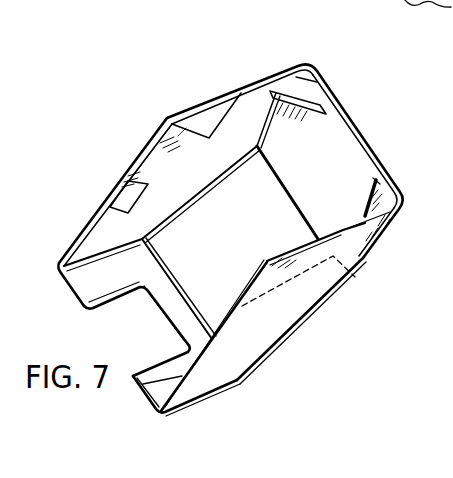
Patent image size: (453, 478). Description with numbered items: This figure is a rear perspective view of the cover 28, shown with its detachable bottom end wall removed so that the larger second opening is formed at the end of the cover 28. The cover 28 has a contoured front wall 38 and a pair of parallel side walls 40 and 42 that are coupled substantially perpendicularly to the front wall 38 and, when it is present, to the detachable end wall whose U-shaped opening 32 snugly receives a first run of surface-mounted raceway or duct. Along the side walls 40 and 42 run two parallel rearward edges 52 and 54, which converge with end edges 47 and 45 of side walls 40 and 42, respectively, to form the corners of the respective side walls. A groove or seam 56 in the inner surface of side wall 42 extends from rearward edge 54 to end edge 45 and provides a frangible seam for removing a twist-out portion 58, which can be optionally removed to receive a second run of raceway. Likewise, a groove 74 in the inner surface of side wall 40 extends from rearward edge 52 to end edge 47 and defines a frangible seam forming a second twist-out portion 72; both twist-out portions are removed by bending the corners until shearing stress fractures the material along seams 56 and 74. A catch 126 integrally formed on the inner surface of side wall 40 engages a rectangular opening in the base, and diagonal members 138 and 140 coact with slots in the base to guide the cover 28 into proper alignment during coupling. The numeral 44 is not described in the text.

The cover 28 is at (322, 71).
The U-shaped opening 32 is at (113, 297).
The front wall 38 is at (243, 268).
The side wall 40 is at (268, 320).
The side wall 42 is at (134, 160).
The side wall 44 is at (366, 128).
The end edge 45 is at (241, 97).
The end edge 47 is at (372, 245).
The rearward edge 52 is at (200, 365).
The rearward edge 54 is at (80, 230).
The groove 56 is at (220, 122).
The twist-out portion 58 is at (181, 127).
The second twist-out portion 72 is at (292, 272).
The groove 74 is at (355, 277).
The catch 126 is at (146, 193).
The diagonal member 138 is at (369, 186).
The diagonal member 140 is at (304, 113).